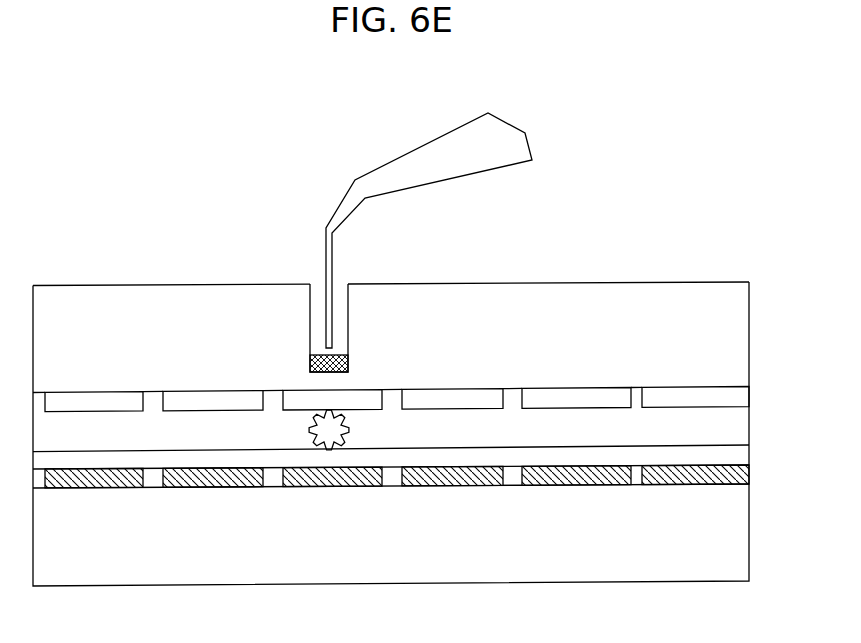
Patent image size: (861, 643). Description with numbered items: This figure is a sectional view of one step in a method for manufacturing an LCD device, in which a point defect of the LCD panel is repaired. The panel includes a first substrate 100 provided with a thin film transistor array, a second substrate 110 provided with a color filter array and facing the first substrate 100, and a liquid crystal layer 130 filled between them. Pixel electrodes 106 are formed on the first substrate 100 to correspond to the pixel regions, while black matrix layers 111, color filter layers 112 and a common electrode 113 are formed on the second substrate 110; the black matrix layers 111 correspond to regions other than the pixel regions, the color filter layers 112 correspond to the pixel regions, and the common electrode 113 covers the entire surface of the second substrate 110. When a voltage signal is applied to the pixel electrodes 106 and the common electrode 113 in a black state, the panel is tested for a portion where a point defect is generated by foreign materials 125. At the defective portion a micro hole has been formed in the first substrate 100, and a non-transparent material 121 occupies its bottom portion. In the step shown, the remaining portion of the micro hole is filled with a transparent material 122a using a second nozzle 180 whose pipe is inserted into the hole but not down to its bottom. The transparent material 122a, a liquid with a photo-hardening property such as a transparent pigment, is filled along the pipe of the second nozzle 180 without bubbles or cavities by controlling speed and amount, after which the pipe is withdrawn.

The first substrate 100 is at (743, 337).
The pixel electrodes 106 is at (743, 397).
The second substrate 110 is at (743, 530).
The black matrix layers 111 is at (513, 487).
The color filter layers 112 is at (743, 477).
The common electrode 113 is at (743, 453).
The non-transparent material 121 is at (347, 360).
The transparent material 122a is at (340, 322).
The foreign materials 125 is at (332, 430).
The liquid crystal layer 130 is at (743, 423).
The second nozzle 180 is at (520, 143).